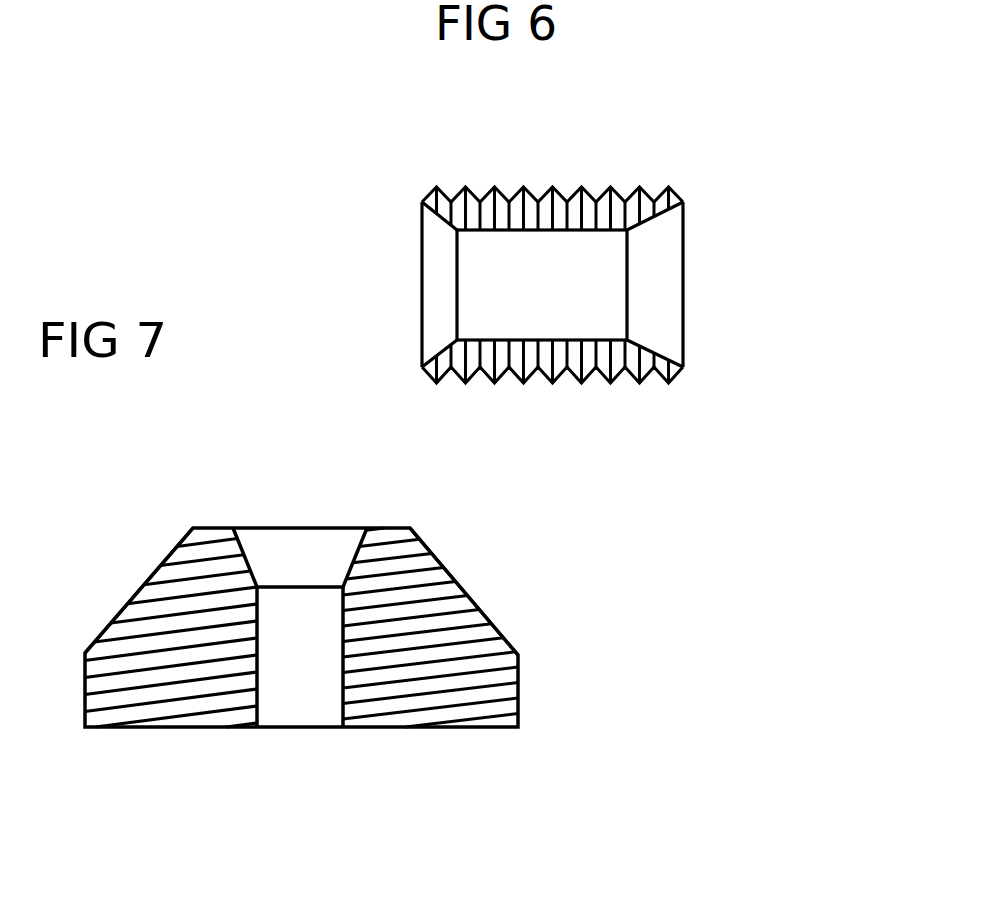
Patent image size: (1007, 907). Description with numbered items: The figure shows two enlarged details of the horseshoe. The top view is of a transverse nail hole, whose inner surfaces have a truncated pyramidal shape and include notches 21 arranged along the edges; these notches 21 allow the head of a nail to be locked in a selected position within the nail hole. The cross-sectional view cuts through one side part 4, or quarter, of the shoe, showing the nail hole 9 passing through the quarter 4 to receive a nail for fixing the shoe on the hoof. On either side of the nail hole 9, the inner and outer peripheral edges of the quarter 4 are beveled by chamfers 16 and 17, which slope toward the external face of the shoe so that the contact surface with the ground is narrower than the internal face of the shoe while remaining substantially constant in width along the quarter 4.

In FIG. 6, the notches 21 is at (563, 190).
In FIG. 7, the chamfer 16 is at (127, 596).
In FIG. 7, the chamfer 17 is at (468, 594).
In FIG. 7, the nail hole 9 is at (300, 708).
In FIG. 7, the side part 4 is at (116, 747).